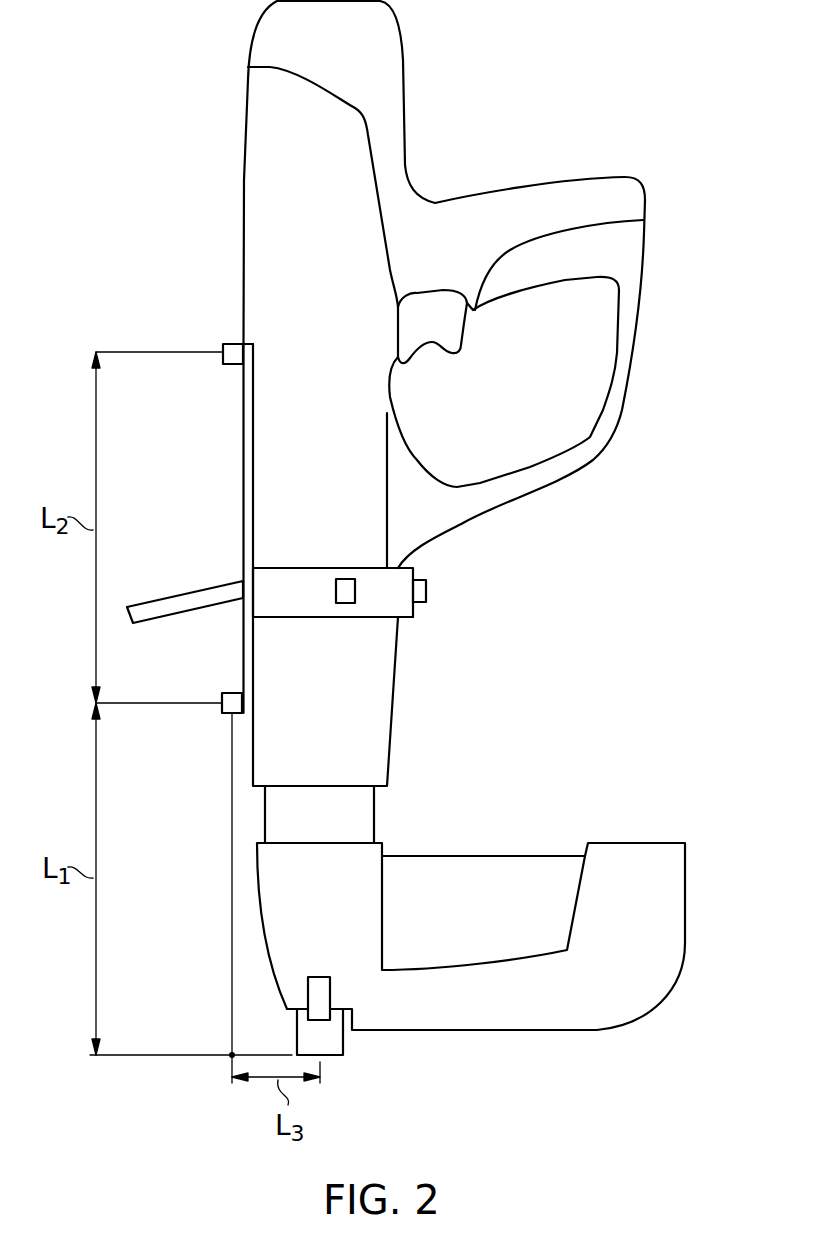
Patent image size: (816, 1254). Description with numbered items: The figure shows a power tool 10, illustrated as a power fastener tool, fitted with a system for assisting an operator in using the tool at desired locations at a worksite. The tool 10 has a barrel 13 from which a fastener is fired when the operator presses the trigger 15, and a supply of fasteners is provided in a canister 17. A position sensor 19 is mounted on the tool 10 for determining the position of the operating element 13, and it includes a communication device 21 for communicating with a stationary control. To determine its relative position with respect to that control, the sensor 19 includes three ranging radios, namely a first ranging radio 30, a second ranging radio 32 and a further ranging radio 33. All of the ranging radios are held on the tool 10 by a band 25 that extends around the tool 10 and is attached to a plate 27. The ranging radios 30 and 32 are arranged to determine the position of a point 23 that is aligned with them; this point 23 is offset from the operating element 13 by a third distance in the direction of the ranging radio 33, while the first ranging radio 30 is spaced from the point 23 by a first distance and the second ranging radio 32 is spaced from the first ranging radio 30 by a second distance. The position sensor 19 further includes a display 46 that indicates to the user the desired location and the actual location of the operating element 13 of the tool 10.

The tool 10 is at (248, 178).
The barrel 13 is at (337, 1045).
The trigger 15 is at (444, 349).
The canister 17 is at (495, 863).
The position sensor 19 is at (373, 603).
The communication device 21 is at (347, 579).
The point 23 is at (232, 1055).
The band 25 is at (407, 608).
The plate 27 is at (243, 456).
The first ranging radio 30 is at (227, 344).
The second ranging radio 32 is at (227, 720).
The ranging radio 33 is at (426, 592).
The display 46 is at (163, 603).